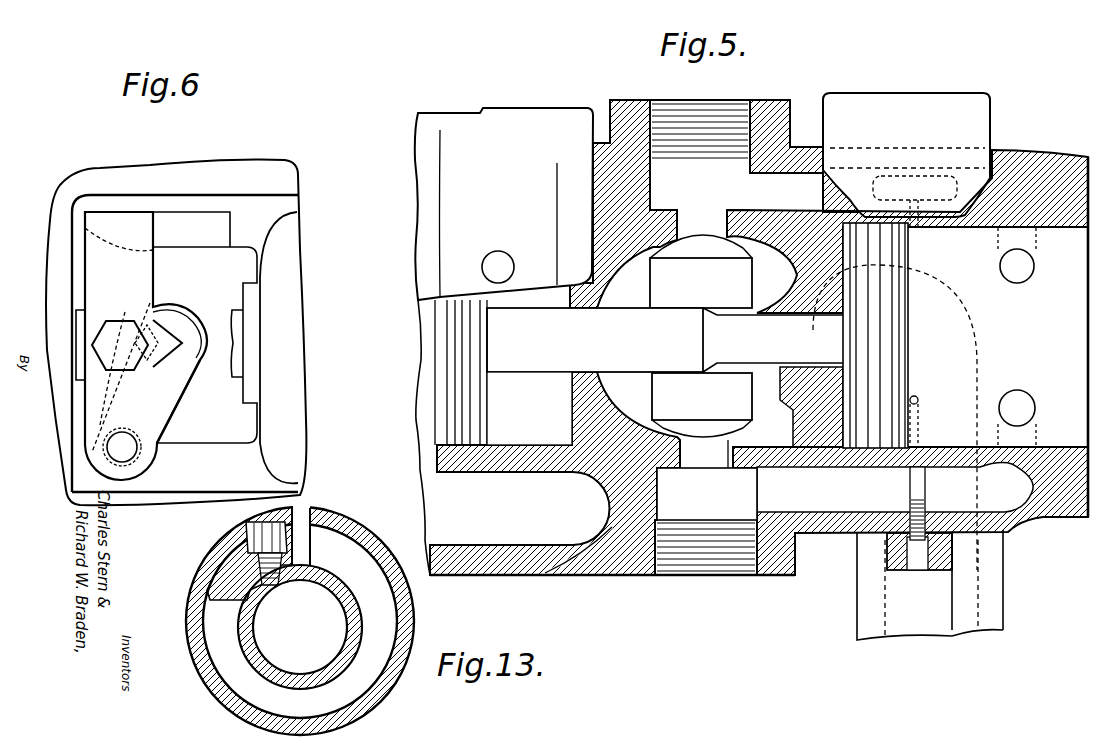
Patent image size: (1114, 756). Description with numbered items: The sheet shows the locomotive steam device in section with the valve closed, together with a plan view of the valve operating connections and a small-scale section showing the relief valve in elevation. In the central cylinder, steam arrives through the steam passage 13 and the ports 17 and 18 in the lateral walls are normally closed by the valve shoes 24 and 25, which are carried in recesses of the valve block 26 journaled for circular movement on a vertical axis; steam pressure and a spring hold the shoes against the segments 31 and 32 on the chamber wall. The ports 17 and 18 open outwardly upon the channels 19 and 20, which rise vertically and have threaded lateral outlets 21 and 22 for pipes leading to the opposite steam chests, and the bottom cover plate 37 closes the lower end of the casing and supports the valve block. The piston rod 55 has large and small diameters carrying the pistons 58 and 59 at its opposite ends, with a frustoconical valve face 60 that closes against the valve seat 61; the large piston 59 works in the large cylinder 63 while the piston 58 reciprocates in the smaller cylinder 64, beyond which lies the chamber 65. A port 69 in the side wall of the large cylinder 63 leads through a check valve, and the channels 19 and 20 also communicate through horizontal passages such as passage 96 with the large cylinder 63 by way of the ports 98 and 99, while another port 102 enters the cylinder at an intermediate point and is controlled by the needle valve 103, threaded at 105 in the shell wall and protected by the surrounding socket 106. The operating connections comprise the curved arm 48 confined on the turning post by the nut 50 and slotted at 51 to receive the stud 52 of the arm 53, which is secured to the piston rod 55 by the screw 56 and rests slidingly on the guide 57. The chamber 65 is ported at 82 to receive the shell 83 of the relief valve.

In FIG. 5, the steam passage 13 is at (1001, 588).
In FIG. 5, the port 17 is at (702, 220).
In FIG. 5, the port 18 is at (720, 465).
In FIG. 5, the channel 19 is at (697, 172).
In FIG. 5, the channel 20 is at (724, 520).
In FIG. 5, the threaded lateral outlet 21 is at (676, 112).
In FIG. 5, the threaded lateral outlet 22 is at (734, 573).
In FIG. 5, the valve shoe 24 is at (720, 250).
In FIG. 5, the valve shoe 25 is at (683, 425).
In FIG. 5, the valve block 26 is at (701, 283).
In FIG. 5, the segment 31 is at (636, 287).
In FIG. 5, the segment 32 is at (752, 410).
In FIG. 5, the bottom cover plate 37 is at (838, 503).
In FIG. 6, the curved arm 48 is at (165, 419).
In FIG. 6, the nut 50 is at (197, 340).
In FIG. 6, the slot 51 is at (123, 430).
In FIG. 6, the stud 52 is at (130, 456).
In FIG. 6, the arm 53 is at (146, 281).
In FIG. 5, the piston rod 55 is at (595, 340).
In FIG. 6, the piston rod 55 is at (80, 345).
In FIG. 6, the screw 56 is at (120, 320).
In FIG. 6, the guide 57 is at (216, 246).
In FIG. 5, the piston 58 is at (489, 414).
In FIG. 5, the piston 59 is at (906, 328).
In FIG. 5, the frustoconical valve face 60 is at (716, 340).
In FIG. 5, the valve seat 61 is at (775, 305).
In FIG. 5, the large cylinder 63 is at (940, 450).
In FIG. 6, the large cylinder 63 is at (297, 388).
In FIG. 5, the cylinder 64 is at (500, 474).
In FIG. 13, the cylinder 64 is at (262, 668).
In FIG. 5, the chamber 65 is at (420, 467).
In FIG. 6, the chamber 65 is at (48, 314).
In FIG. 13, the chamber 65 is at (357, 550).
In FIG. 5, the port 69 is at (916, 222).
In FIG. 5, the port 82 is at (504, 252).
In FIG. 13, the port 82 is at (205, 588).
In FIG. 13, the shell 83 is at (246, 538).
In FIG. 5, the horizontal passage 96 is at (870, 155).
In FIG. 5, the port 98 is at (1034, 270).
In FIG. 5, the port 99 is at (1034, 397).
In FIG. 5, the port 102 is at (917, 397).
In FIG. 5, the needle valve 103 is at (927, 487).
In FIG. 5, the threaded portion 105 is at (878, 540).
In FIG. 5, the socket 106 is at (944, 573).